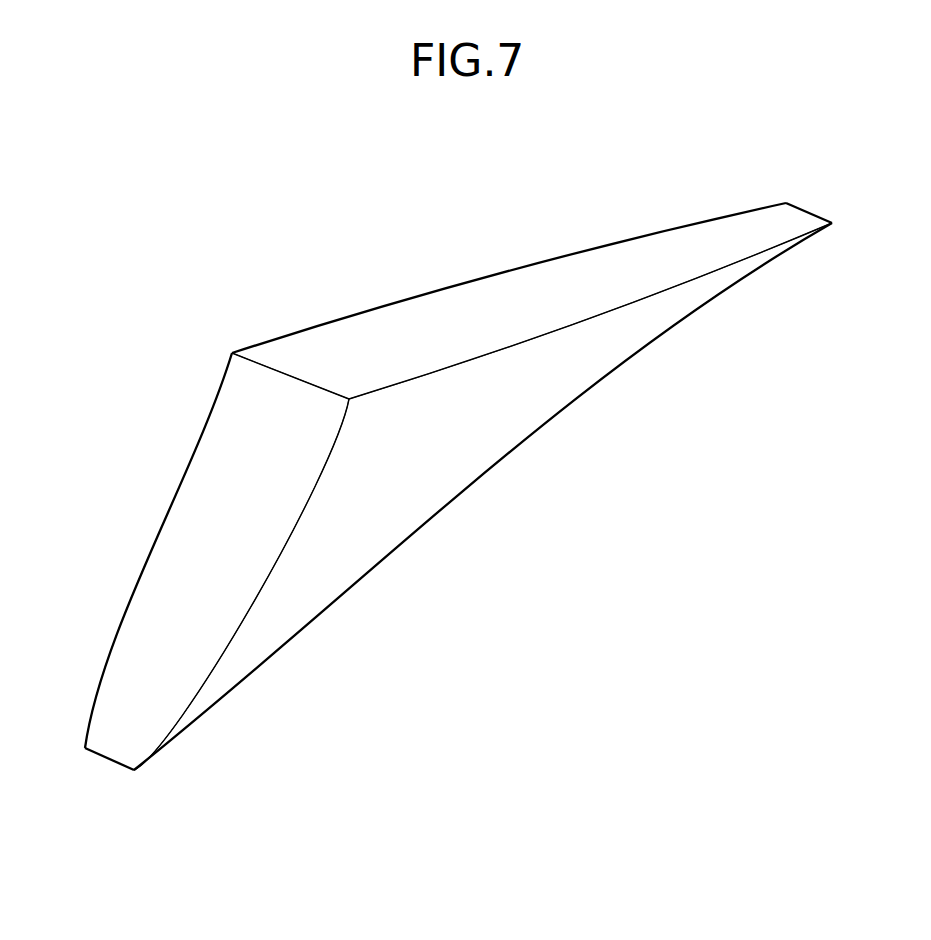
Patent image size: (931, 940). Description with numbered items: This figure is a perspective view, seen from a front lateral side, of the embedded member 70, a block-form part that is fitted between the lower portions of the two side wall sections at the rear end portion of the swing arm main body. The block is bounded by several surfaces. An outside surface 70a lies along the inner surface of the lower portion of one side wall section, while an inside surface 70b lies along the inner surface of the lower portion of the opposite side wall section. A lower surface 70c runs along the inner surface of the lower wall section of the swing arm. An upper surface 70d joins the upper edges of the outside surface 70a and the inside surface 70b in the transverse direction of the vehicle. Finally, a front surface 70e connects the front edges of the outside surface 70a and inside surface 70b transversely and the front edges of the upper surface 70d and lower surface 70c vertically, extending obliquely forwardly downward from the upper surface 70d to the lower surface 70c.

The embedded member 70 is at (383, 147).
The outside surface 70a is at (455, 455).
The inside surface 70b is at (155, 546).
The lower surface 70c is at (407, 542).
The upper surface 70d is at (450, 320).
The front surface 70e is at (228, 497).